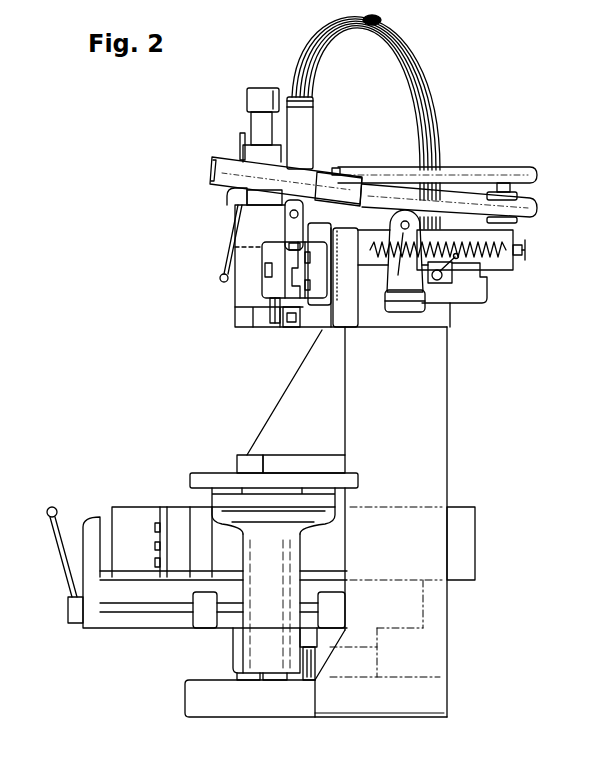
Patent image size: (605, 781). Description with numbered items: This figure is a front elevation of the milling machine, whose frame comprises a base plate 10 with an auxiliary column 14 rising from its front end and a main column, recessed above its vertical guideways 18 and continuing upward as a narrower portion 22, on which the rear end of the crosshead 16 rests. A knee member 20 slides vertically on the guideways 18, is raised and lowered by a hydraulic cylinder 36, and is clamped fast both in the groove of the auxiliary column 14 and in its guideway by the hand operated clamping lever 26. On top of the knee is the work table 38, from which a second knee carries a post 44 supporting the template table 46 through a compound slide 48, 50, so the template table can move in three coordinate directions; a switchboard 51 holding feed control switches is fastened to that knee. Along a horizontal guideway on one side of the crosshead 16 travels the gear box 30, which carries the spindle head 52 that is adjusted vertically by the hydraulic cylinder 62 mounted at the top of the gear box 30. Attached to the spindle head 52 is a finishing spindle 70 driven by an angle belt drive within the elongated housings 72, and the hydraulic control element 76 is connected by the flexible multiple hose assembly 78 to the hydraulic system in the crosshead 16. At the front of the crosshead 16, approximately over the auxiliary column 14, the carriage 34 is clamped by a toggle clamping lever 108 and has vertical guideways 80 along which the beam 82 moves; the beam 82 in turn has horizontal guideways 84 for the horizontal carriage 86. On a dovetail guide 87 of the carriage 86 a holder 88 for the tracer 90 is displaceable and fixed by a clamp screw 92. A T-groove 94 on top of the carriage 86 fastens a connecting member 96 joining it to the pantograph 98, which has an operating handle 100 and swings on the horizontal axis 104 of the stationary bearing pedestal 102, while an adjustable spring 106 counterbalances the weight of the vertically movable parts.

The base plate 10 is at (245, 712).
The auxiliary column 14 is at (446, 460).
The crosshead 16 is at (467, 293).
The vertical guideways 18 is at (240, 466).
The knee member 20 is at (233, 634).
The narrower portion 22 is at (297, 402).
The clamping lever 26 is at (53, 537).
The gear box 30 is at (246, 317).
The carriage 34 is at (514, 236).
The hydraulic cylinder 36 is at (311, 668).
The work table 38 is at (127, 515).
The post 44 is at (273, 577).
The template table 46 is at (360, 478).
The compound slide 48 is at (340, 517).
The compound slide 50 is at (338, 497).
The switchboard 51 is at (165, 515).
The spindle head 52 is at (210, 235).
The hydraulic cylinder 62 is at (245, 101).
The finishing spindle 70 is at (289, 316).
The elongated housings 72 is at (458, 207).
The hydraulic control element 76 is at (306, 142).
The flexible multiple hose assembly 78 is at (423, 54).
The vertical guideways 80 is at (334, 314).
The beam 82 is at (323, 300).
The horizontal guideways 84 is at (307, 300).
The carriage 86 is at (235, 247).
The dovetail guide 87 is at (286, 271).
The holder 88 is at (278, 278).
The tracer 90 is at (270, 313).
The clamp screw 92 is at (265, 271).
The T-groove 94 is at (297, 256).
The connecting member 96 is at (228, 210).
The pantograph 98 is at (212, 176).
The operating handle 100 is at (219, 277).
The bearing pedestal 102 is at (410, 297).
The horizontal axis 104 is at (405, 261).
The adjustable spring 106 is at (518, 262).
The toggle clamping lever 108 is at (457, 262).